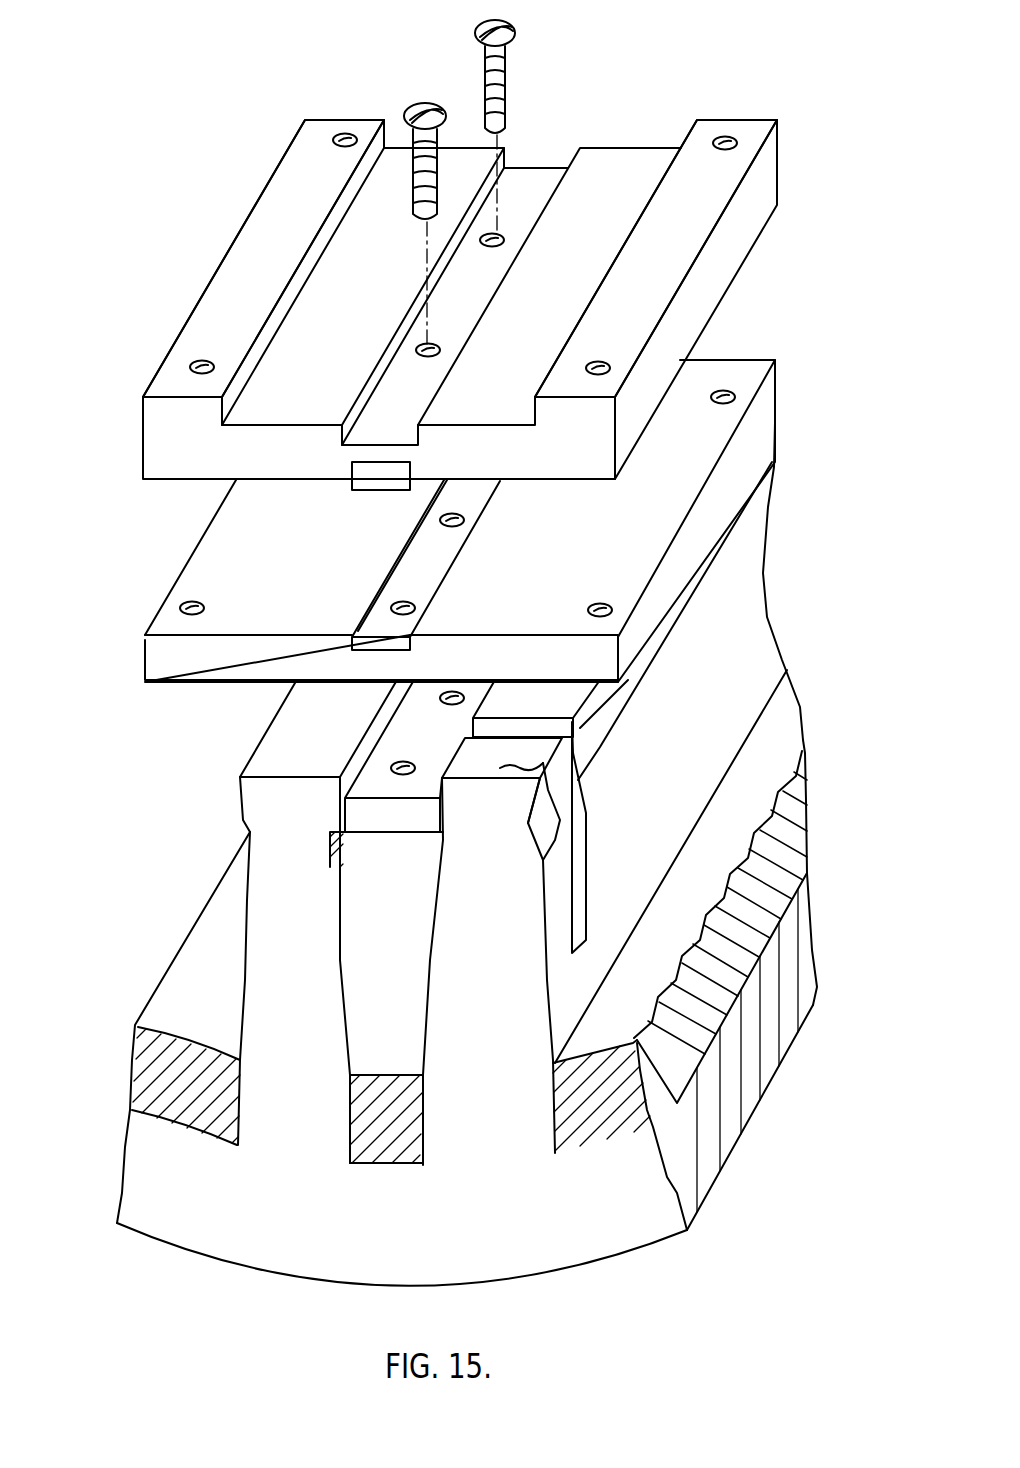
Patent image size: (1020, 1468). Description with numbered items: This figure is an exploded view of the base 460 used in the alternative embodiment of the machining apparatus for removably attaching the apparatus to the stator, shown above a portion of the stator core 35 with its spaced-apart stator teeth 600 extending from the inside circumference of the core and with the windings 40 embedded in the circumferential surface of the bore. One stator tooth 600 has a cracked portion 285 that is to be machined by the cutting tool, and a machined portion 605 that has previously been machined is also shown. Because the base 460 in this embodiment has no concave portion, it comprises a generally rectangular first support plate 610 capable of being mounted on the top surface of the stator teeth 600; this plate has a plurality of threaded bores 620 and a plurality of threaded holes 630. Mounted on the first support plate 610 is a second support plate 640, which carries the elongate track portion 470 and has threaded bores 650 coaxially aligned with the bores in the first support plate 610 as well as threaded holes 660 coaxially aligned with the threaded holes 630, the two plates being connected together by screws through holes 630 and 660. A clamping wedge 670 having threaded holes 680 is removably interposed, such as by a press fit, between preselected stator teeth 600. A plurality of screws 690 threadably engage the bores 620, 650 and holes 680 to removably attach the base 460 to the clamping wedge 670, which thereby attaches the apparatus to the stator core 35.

The screws 690 is at (444, 62).
The elongate track portion 470 is at (697, 165).
The threaded holes 660 is at (205, 362).
The threaded bores 650 is at (440, 347).
The second support plate 640 is at (143, 434).
The base 460 is at (775, 362).
The threaded bores 620 is at (464, 520).
The threaded holes 630 is at (190, 600).
The first support plate 610 is at (145, 657).
The threaded holes 680 is at (435, 740).
The clamping wedge 670 is at (420, 812).
The machined portion 605 is at (590, 823).
The cracked portion 285 is at (545, 865).
The stator teeth 600 is at (320, 1012).
The windings 40 is at (165, 1067).
The stator core 35 is at (265, 1272).